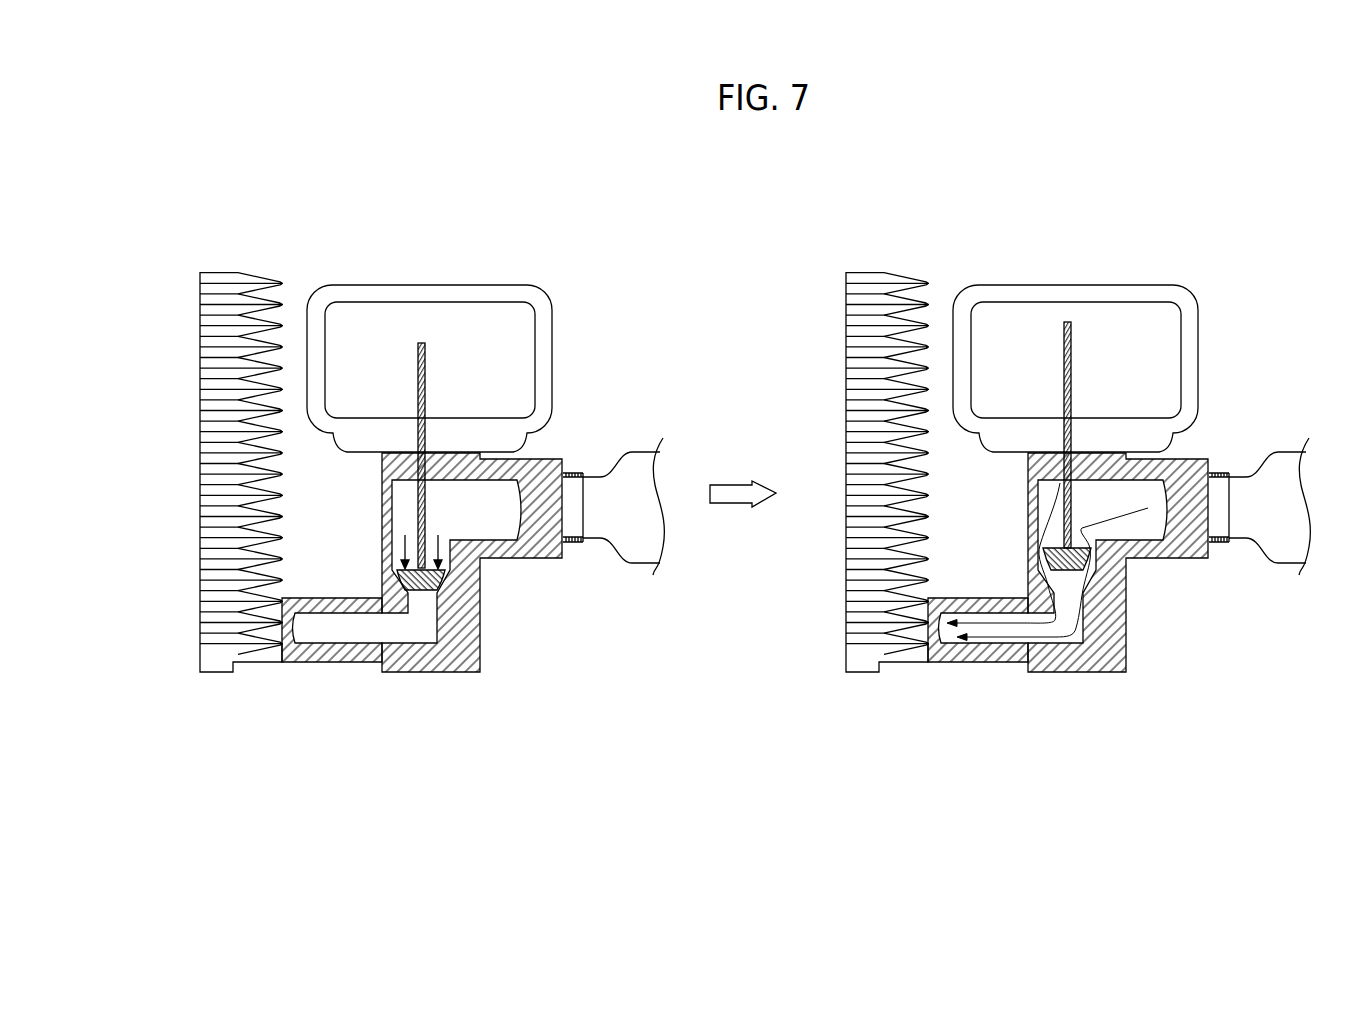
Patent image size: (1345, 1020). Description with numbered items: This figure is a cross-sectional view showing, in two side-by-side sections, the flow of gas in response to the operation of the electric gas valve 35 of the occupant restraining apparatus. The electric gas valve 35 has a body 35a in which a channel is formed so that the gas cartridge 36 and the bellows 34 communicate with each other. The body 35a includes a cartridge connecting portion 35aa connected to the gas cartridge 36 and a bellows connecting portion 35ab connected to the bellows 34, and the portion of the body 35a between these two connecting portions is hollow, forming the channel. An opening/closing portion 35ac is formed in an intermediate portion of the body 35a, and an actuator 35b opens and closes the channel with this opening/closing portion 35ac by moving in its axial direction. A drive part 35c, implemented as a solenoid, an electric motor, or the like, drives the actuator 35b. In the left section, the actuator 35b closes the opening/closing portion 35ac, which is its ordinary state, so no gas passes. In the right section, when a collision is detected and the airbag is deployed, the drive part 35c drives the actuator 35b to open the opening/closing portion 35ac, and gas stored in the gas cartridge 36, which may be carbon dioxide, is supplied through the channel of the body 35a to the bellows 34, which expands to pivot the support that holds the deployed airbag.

The bellows 34 is at (207, 355).
The electric gas valve 35 is at (560, 265).
The body 35a is at (545, 468).
The cartridge connecting portion 35aa is at (543, 337).
The bellows connecting portion 35ab is at (312, 662).
The opening/closing portion 35ac is at (383, 587).
The actuator 35b is at (418, 507).
The drive part 35c is at (1190, 338).
The gas cartridge 36 is at (632, 552).